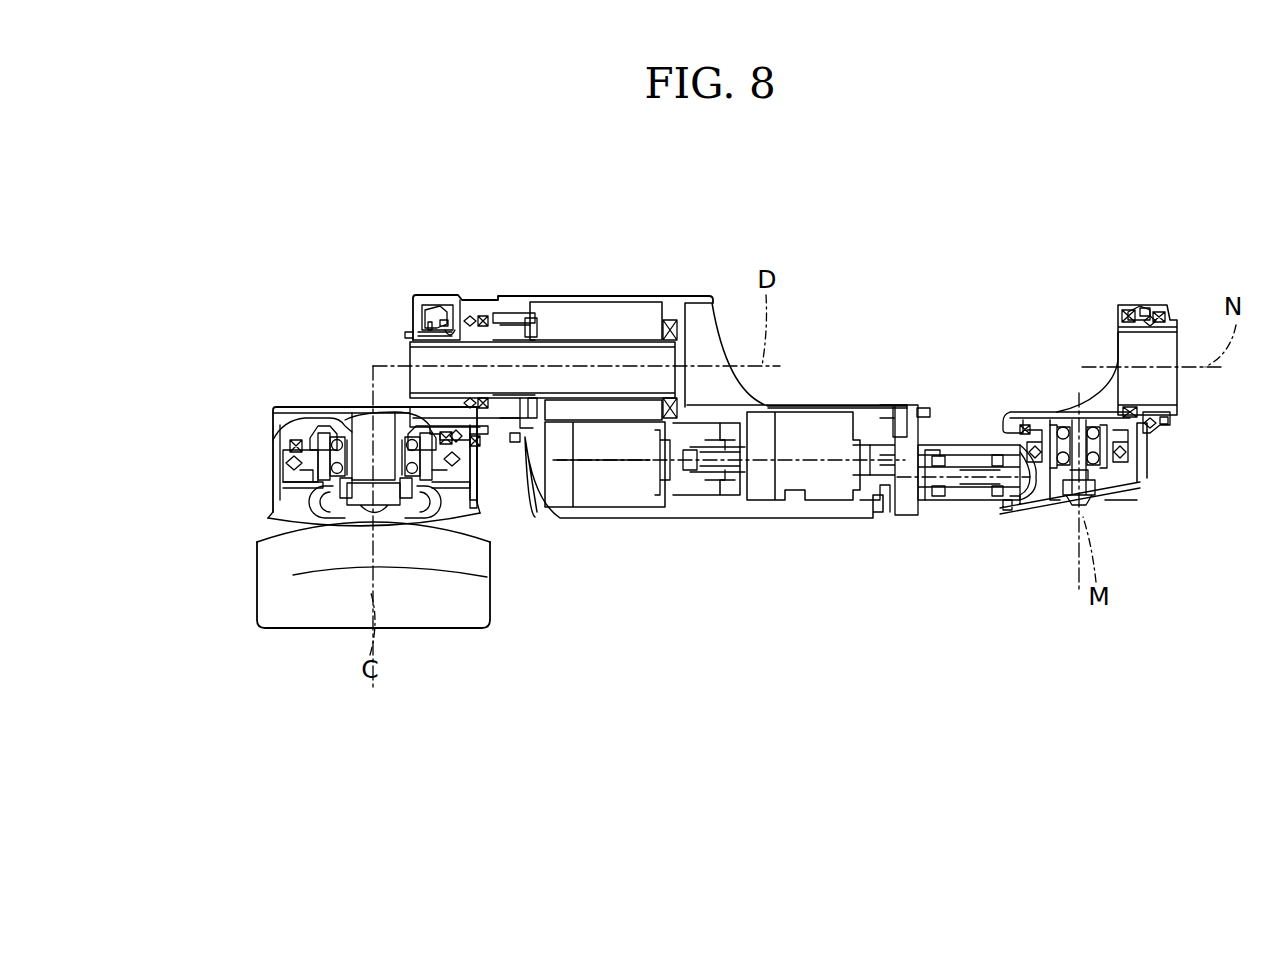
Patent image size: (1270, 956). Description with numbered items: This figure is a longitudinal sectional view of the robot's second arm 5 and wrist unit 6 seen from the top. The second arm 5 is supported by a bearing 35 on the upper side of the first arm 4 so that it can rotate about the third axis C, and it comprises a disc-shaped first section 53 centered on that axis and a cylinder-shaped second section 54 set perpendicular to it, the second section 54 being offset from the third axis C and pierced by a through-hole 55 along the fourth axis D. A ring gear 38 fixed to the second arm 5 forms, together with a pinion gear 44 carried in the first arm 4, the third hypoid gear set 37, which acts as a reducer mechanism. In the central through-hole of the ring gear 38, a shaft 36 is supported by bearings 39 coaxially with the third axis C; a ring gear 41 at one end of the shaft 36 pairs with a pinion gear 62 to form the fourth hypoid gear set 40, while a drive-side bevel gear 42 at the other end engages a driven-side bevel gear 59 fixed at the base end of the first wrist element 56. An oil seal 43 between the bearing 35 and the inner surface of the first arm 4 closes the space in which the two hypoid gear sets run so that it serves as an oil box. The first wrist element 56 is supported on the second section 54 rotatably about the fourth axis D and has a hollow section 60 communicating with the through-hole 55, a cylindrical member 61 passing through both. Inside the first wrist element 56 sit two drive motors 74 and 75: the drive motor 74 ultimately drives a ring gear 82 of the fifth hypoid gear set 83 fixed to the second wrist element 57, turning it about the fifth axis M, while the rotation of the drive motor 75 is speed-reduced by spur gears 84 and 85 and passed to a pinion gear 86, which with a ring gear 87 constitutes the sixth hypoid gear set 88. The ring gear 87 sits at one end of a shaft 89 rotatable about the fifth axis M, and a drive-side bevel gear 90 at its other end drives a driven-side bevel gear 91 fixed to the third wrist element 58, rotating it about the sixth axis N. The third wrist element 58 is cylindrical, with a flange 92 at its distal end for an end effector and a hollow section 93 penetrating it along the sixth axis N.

The first arm 4 is at (248, 578).
The second arm 5 is at (296, 388).
The wrist unit 6 is at (1127, 290).
The bearing 35 is at (283, 466).
The shaft 36 is at (387, 480).
The third hypoid gear set 37 is at (450, 483).
The ring gear 38 is at (296, 487).
The bearings 39 is at (337, 438).
The fourth hypoid gear set 40 is at (308, 500).
The ring gear 41 is at (270, 512).
The drive-side bevel gear 42 is at (324, 420).
The oil seal 43 is at (290, 444).
The pinion gear 44 is at (428, 497).
The first section 53 is at (285, 405).
The second section 54 is at (422, 298).
The through-hole 55 is at (448, 330).
The first wrist element 56 is at (674, 296).
The second wrist element 57 is at (1020, 410).
The third wrist element 58 is at (1172, 318).
The driven-side bevel gear 59 is at (442, 436).
The hollow section 60 is at (609, 350).
The cylindrical member 61 is at (517, 330).
The pinion gear 62 is at (347, 500).
The drive motor 74 is at (606, 515).
The drive motor 75 is at (810, 500).
The ring gear 82 is at (1132, 472).
The fifth hypoid gear set 83 is at (1150, 470).
The spur gear 84 is at (920, 437).
The spur gear 85 is at (915, 490).
The pinion gear 86 is at (1028, 492).
The ring gear 87 is at (1118, 487).
The sixth hypoid gear set 88 is at (1038, 470).
The shaft 89 is at (1080, 517).
The drive-side bevel gear 90 is at (1004, 425).
The driven-side bevel gear 91 is at (1150, 414).
The flange 92 is at (1178, 345).
The hollow section 93 is at (1118, 344).